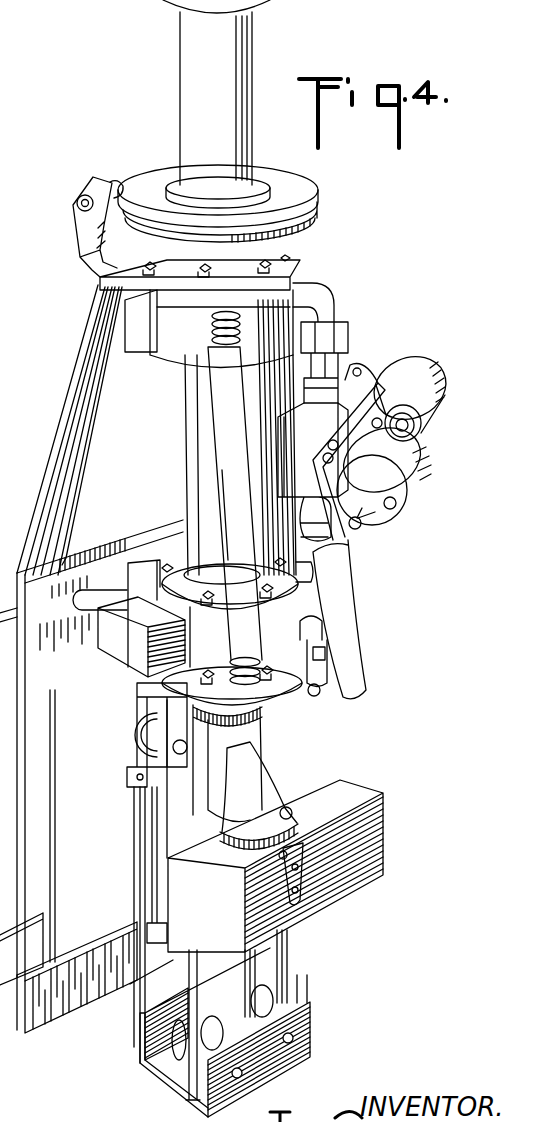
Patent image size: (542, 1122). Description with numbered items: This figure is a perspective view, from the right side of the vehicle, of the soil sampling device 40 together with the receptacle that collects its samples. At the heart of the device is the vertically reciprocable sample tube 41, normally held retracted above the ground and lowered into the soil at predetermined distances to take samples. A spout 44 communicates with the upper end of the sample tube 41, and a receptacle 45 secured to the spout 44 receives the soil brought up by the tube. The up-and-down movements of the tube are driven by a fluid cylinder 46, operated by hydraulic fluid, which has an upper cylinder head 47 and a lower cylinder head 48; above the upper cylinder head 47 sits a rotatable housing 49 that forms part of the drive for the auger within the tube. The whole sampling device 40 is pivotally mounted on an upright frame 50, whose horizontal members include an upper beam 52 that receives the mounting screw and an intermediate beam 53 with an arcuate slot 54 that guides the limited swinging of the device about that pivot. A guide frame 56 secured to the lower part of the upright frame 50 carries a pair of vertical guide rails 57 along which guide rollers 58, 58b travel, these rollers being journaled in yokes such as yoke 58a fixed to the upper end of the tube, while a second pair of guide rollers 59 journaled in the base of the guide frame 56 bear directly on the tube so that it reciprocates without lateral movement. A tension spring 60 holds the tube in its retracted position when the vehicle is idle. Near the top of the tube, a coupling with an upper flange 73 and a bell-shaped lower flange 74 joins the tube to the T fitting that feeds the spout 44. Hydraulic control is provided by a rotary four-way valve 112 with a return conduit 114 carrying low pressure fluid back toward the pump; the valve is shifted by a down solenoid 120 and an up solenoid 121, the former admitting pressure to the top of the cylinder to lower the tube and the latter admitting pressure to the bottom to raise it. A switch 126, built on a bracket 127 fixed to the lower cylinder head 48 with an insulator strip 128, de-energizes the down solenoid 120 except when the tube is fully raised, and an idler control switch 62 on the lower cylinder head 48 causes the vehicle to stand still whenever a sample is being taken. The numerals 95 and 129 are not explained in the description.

The sampling device 40 is at (344, 245).
The sample tube 41 is at (255, 968).
The spout 44 is at (283, 807).
The receptacle 45 is at (372, 873).
The fluid cylinder 46 is at (192, 463).
The upper cylinder head 47 is at (173, 352).
The lower cylinder head 48 is at (300, 605).
The rotatable housing 49 is at (183, 105).
The upright frame 50 is at (45, 507).
The upper beam 52 is at (107, 314).
The beam 53 is at (100, 557).
The arcuate slot 54 is at (58, 603).
The guide frame 56 is at (143, 1033).
The vertical guide rails 57 is at (143, 1000).
The guide roller 58 is at (147, 753).
The yoke 58a is at (167, 728).
The guide roller 58b is at (294, 697).
The guide rollers 59 is at (185, 1060).
The tension spring 60 is at (225, 497).
The idler control switch 62 is at (123, 647).
The upper flange 73 is at (222, 697).
The lower flange 74 is at (227, 712).
The disk plate 95 is at (318, 186).
The rotary four-way valve 112 is at (291, 417).
The return conduit 114 is at (343, 573).
The down solenoid 120 is at (424, 490).
The up solenoid 121 is at (438, 407).
The switch 126 is at (340, 659).
The bracket 127 is at (313, 630).
The insulator strip 128 is at (313, 673).
The knob 129 is at (300, 702).